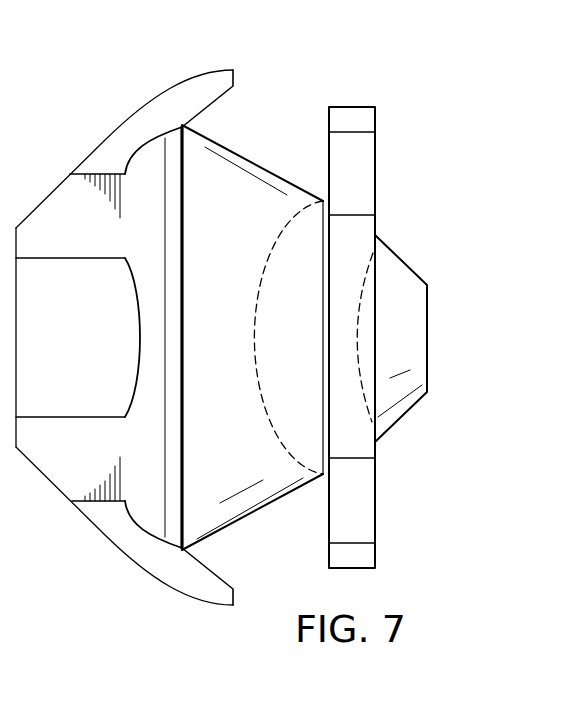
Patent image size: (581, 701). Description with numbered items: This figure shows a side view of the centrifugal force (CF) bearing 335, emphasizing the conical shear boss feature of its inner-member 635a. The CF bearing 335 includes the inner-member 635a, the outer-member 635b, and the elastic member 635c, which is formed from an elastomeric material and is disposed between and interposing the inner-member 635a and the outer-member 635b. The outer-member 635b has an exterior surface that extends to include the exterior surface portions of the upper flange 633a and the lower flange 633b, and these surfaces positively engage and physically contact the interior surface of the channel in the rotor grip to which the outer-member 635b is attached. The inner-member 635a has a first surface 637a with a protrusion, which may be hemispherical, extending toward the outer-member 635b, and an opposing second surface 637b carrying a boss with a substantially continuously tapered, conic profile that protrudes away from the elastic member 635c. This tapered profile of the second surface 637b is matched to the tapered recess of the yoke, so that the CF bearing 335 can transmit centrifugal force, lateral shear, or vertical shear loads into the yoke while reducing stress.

The centrifugal force (CF) bearing 335 is at (475, 100).
The upper flange 633a is at (238, 58).
The lower flange 633b is at (238, 617).
The inner-member 635a is at (375, 163).
The outer-member 635b is at (101, 142).
The elastic member 635c is at (253, 168).
The first surface 637a is at (285, 441).
The second surface 637b is at (420, 233).